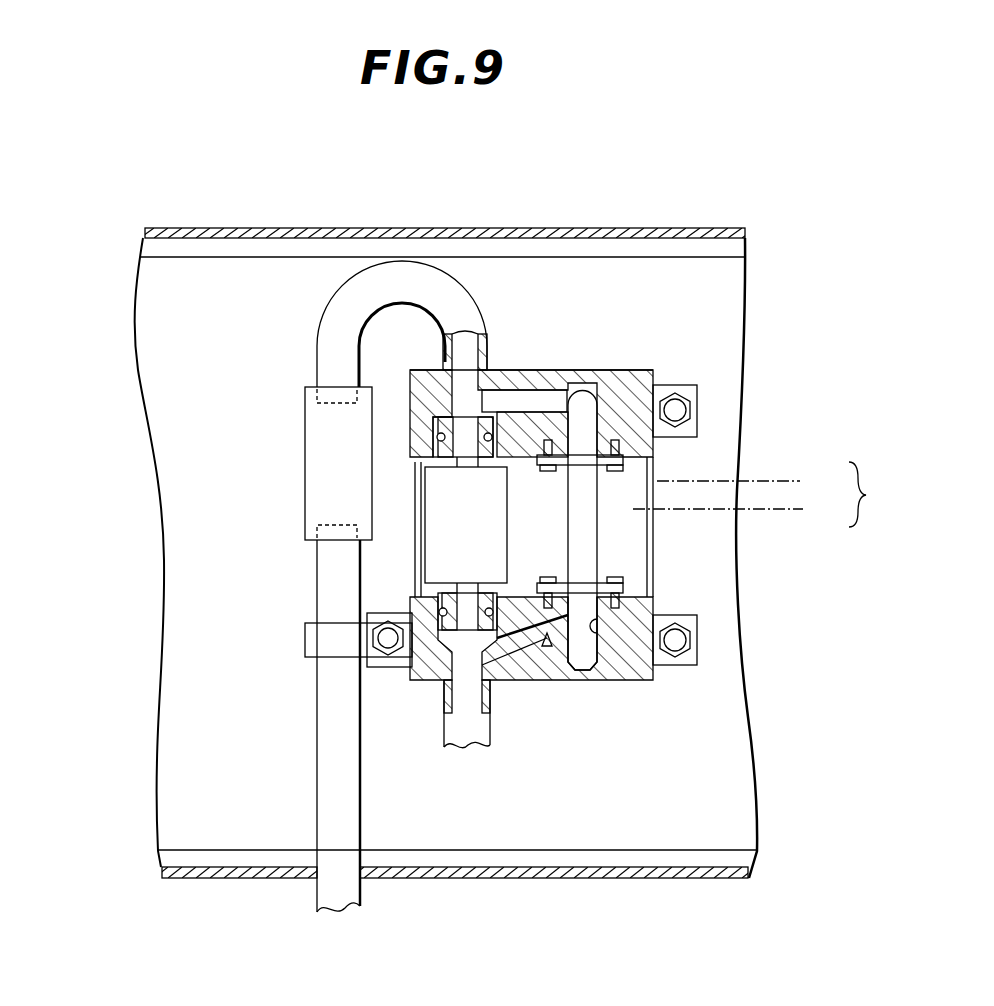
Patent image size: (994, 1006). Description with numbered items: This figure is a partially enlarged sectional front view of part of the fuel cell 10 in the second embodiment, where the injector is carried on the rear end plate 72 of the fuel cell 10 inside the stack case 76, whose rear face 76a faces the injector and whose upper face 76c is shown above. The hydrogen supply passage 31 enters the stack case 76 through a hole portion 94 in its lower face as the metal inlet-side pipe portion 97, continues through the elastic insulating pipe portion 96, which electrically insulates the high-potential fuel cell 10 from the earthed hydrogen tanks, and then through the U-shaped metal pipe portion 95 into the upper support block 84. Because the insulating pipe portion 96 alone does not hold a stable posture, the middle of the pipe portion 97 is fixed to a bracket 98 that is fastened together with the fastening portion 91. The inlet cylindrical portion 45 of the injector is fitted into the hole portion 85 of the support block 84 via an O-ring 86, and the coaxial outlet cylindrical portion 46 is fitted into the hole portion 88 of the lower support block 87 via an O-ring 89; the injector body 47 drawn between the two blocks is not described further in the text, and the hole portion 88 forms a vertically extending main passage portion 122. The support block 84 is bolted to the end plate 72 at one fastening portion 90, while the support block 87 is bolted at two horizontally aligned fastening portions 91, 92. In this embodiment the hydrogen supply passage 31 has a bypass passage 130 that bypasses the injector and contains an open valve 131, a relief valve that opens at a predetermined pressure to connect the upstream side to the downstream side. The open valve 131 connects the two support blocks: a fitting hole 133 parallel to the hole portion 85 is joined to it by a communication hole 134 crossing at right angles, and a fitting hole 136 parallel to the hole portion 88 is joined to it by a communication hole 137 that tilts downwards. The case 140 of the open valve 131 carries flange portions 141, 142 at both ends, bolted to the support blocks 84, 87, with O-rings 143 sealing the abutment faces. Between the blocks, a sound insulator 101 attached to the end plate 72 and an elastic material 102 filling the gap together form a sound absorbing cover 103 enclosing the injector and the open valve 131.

The fuel cell 10 is at (118, 323).
The hydrogen supply passage 31 is at (310, 895).
The cylindrical portion 45 is at (410, 400).
The cylindrical portion 46 is at (392, 640).
The piston 47 is at (427, 550).
The end plate 72 is at (740, 818).
The stack case 76 is at (193, 890).
The rear face 76a is at (237, 882).
The upper face 76c is at (300, 228).
The support block 84 is at (425, 355).
The hole portion 85 is at (488, 360).
The O-ring 86 is at (437, 438).
The support block 87 is at (443, 690).
The hole portion 88 is at (449, 698).
The O-ring 89 is at (547, 648).
The fastening portion 90 is at (698, 410).
The fastening portion 91 is at (437, 620).
The fastening portion 92 is at (698, 638).
The hole portion 94 is at (370, 882).
The metal pipe portion 95 is at (457, 297).
The insulating pipe portion 96 is at (310, 495).
The metal pipe portion 97 is at (327, 708).
The bracket 98 is at (313, 643).
The sound insulator 101 is at (751, 480).
The elastic material 102 is at (739, 512).
The sound absorbing cover 103 is at (877, 494).
The main passage portion 122 is at (403, 691).
The bypass passage 130 is at (600, 365).
The open valve 131 is at (608, 534).
The fitting hole 133 is at (597, 408).
The communication hole 134 is at (583, 392).
The fitting hole 136 is at (603, 633).
The communication hole 137 is at (562, 647).
The case 140 is at (583, 557).
The flange portion 141 is at (624, 462).
The flange portion 142 is at (624, 588).
The O-rings 143 is at (620, 450).